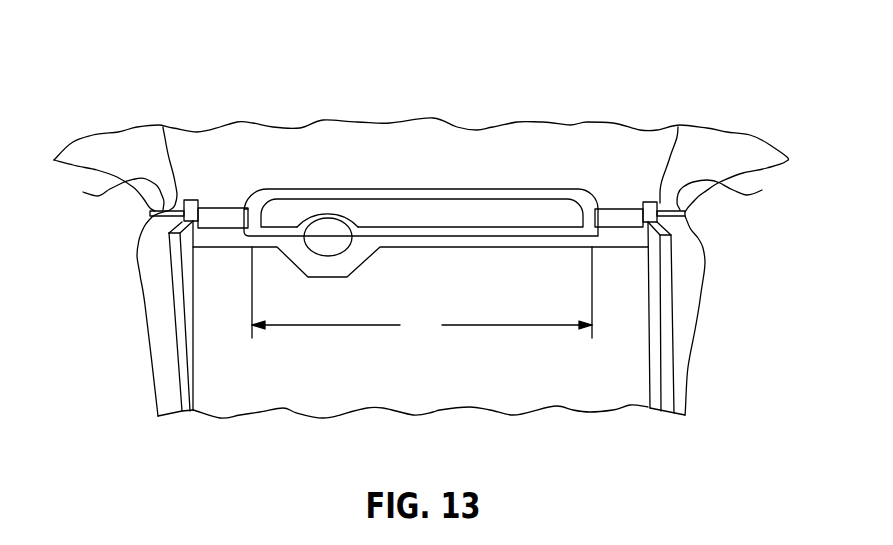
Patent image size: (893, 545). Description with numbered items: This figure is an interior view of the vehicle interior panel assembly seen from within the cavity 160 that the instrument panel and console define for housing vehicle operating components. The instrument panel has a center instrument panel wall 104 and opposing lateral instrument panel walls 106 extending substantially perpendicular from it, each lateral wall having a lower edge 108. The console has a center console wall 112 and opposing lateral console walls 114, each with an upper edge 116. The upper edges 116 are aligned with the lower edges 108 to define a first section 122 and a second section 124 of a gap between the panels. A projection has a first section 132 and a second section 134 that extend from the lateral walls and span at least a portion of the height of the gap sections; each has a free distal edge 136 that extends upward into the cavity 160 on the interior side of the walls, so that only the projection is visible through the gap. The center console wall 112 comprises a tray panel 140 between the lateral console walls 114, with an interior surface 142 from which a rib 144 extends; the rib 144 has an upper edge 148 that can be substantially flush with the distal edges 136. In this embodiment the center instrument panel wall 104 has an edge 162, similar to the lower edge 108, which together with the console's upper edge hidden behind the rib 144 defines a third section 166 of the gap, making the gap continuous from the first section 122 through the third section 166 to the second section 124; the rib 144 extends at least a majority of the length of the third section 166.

The center instrument panel wall 104 is at (523, 155).
The opposing lateral instrument panel walls 106 is at (402, 140).
The lower edge 108 is at (420, 192).
The center console wall 112 is at (523, 382).
The opposing lateral console walls 114 is at (168, 380).
The upper edge 116 is at (421, 314).
The first section of the gap 122 is at (687, 214).
The second section of the gap 124 is at (150, 216).
The first section of the projection 132 is at (670, 273).
The second section of the projection 134 is at (230, 152).
The free distal edge 136 is at (409, 148).
The tray panel 140 is at (478, 301).
The interior surface 142 is at (421, 139).
The rib 144 is at (382, 167).
The upper edge of the rib 148 is at (422, 152).
The cavity 160 is at (283, 384).
The edge 162 is at (650, 149).
The third section of the gap 166 is at (422, 293).